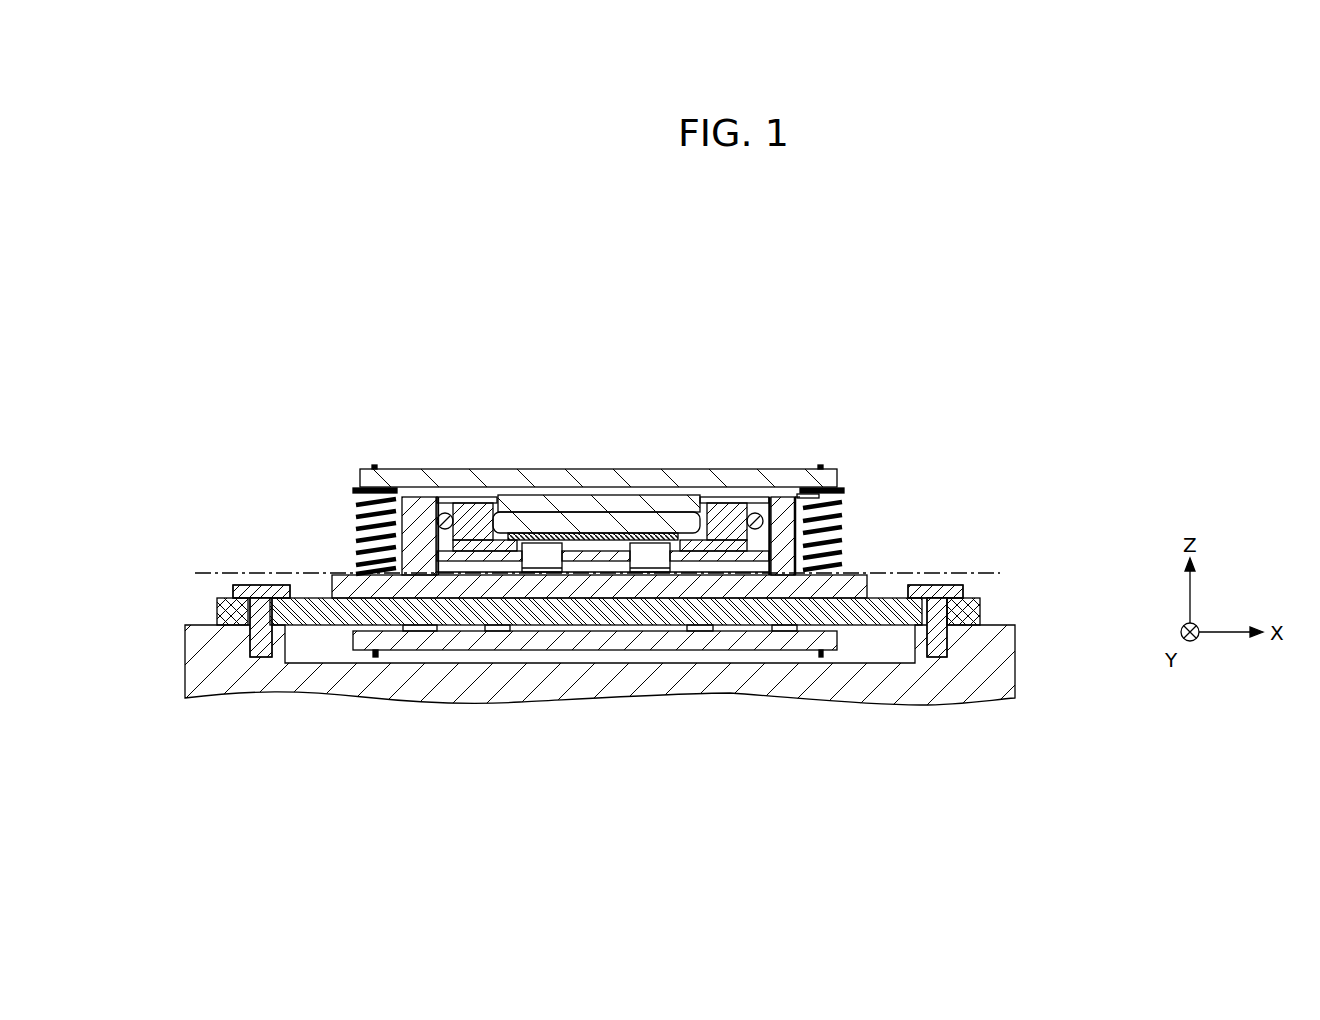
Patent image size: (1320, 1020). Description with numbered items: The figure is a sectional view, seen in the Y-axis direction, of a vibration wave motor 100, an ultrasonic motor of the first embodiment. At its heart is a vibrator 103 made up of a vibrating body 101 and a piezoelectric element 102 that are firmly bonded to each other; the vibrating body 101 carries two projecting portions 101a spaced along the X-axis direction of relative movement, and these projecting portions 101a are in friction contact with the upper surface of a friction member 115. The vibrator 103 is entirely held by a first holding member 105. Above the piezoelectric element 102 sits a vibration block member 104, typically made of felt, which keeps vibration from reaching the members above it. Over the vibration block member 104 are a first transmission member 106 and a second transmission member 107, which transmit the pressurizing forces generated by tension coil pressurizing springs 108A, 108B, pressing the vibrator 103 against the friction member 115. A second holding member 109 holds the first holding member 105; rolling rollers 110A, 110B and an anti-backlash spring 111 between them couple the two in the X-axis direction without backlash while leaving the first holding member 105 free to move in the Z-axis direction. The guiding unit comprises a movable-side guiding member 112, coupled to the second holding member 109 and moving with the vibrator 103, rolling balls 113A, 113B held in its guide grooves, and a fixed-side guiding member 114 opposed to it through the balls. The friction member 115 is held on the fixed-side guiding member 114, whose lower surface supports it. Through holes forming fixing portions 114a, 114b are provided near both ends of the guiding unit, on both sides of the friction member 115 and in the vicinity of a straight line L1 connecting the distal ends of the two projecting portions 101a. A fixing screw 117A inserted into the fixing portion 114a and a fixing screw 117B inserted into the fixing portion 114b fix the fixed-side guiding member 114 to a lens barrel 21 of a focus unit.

The vibration wave motor 100 is at (311, 354).
The lens barrel 21 is at (1000, 683).
The vibrating body 101 is at (425, 568).
The piezoelectric element 102 is at (410, 516).
The vibrator 103 is at (250, 508).
The projecting portions 101a is at (640, 560).
The vibration block member 104 is at (673, 522).
The first holding member 105 is at (727, 520).
The first transmission member 106 is at (628, 503).
The second transmission member 107 is at (408, 478).
The pressurizing spring 108A is at (355, 505).
The pressurizing spring 108B is at (848, 516).
The second holding member 109 is at (848, 500).
The rolling roller 110A is at (447, 513).
The rolling roller 110B is at (757, 513).
The anti-backlash spring 111 is at (790, 470).
The movable-side guiding member 112 is at (812, 655).
The rolling ball 113A is at (498, 631).
The rolling ball 113B is at (704, 631).
The fixed-side guiding member 114 is at (866, 627).
The fixing portion 114a is at (238, 622).
The fixing portion 114b is at (950, 630).
The friction member 115 is at (868, 597).
The fixing screw 117A is at (225, 612).
The fixing screw 117B is at (970, 603).
The straight line L1 is at (581, 572).